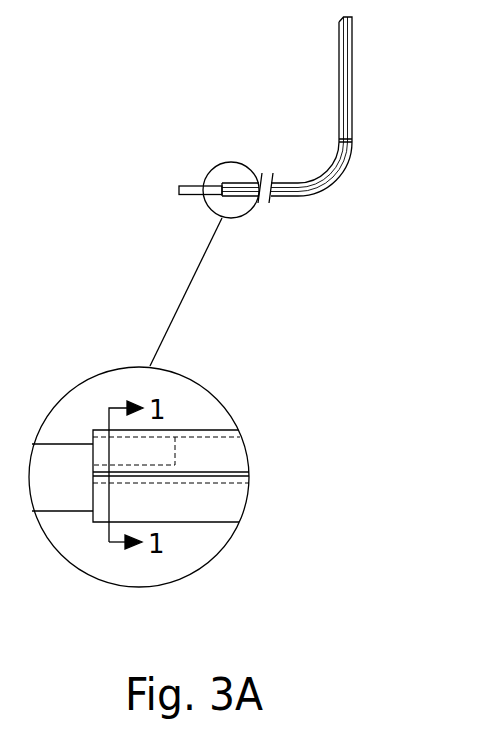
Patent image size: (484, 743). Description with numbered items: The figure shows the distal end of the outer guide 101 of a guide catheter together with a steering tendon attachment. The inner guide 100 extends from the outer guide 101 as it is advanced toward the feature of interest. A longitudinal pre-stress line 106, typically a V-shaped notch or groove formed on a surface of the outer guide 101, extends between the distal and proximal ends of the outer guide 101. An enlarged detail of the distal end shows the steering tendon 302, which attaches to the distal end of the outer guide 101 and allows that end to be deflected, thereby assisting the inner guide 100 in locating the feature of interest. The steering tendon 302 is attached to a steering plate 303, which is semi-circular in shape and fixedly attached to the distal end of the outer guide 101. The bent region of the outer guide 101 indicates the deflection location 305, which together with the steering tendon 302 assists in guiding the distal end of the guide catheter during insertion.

The inner guide 100 is at (188, 186).
The outer guide 101 is at (336, 43).
The pre-stress line 106 is at (340, 558).
The steering tendon 302 is at (185, 429).
The steering plate 303 is at (180, 461).
The deflection location 305 is at (331, 188).